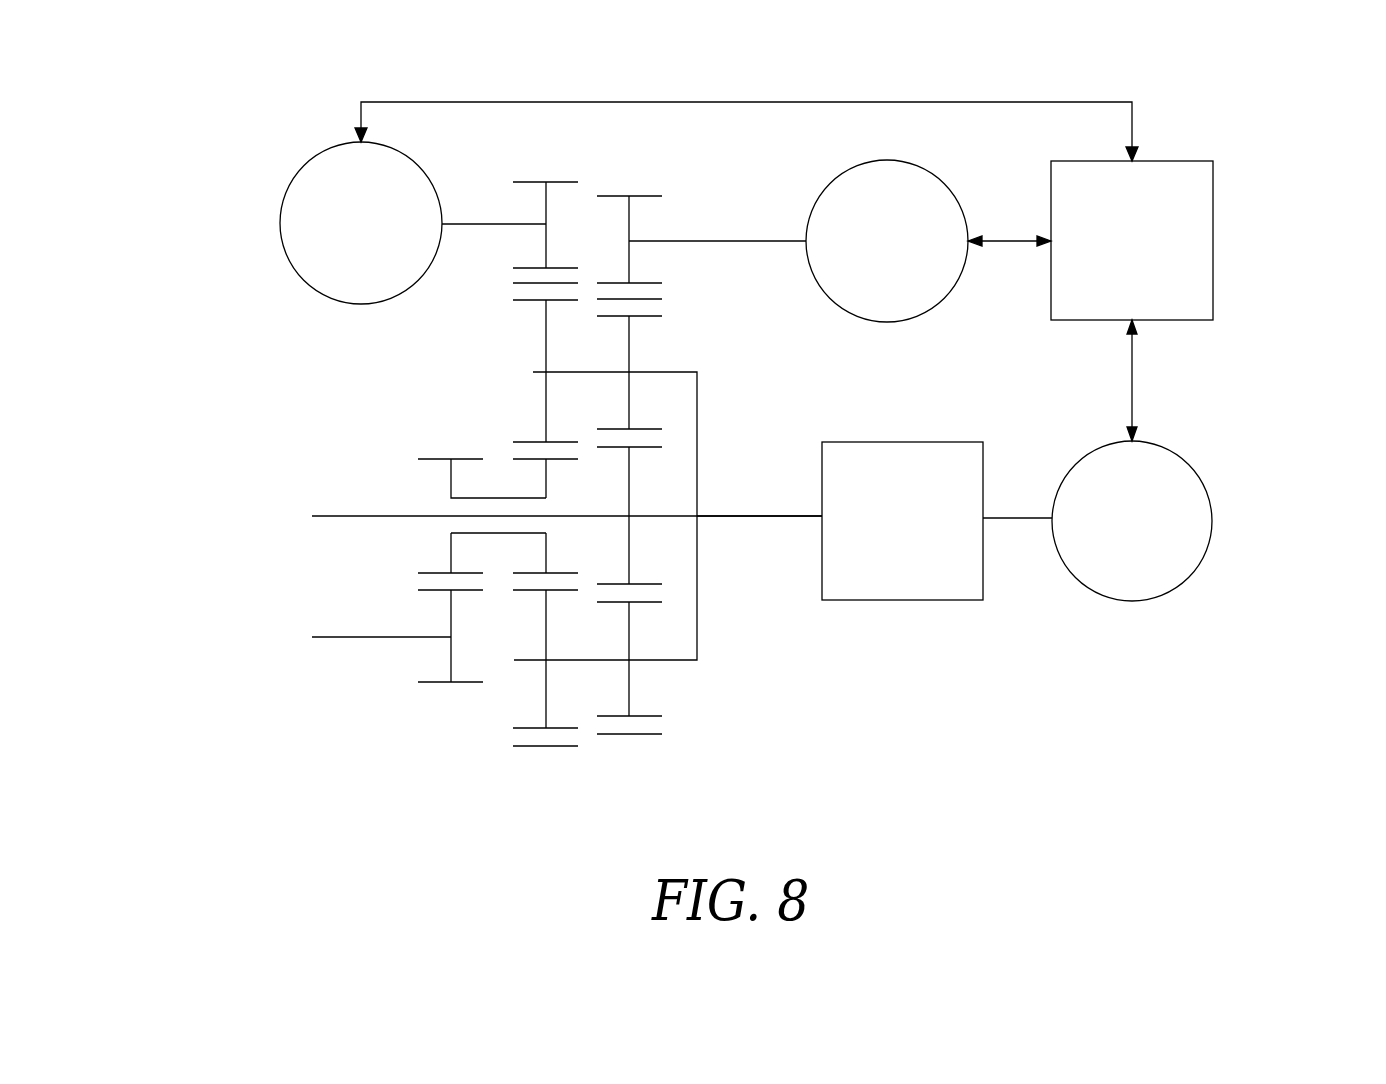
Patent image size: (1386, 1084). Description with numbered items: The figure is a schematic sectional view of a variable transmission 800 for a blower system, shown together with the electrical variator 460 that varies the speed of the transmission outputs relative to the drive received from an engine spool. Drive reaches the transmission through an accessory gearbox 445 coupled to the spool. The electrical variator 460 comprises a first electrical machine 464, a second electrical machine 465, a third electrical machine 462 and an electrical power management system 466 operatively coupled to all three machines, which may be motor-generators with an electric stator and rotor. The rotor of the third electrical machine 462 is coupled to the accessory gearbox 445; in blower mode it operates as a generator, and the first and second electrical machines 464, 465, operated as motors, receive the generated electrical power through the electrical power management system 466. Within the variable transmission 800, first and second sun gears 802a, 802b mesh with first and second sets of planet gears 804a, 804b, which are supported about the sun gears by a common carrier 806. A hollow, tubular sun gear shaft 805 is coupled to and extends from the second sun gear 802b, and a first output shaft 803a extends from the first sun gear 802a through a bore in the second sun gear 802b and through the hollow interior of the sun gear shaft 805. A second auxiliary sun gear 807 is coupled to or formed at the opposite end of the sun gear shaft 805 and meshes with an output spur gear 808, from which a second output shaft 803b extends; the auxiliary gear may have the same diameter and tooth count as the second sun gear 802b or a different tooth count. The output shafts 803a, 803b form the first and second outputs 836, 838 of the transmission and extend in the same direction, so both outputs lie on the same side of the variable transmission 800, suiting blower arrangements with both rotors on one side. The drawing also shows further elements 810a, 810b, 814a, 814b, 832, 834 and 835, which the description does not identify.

The electrical variator 460 is at (1240, 95).
The third electrical machine 462 is at (1185, 455).
The first electrical machine 464 is at (887, 160).
The second electrical machine 465 is at (283, 197).
The electrical power management system 466 is at (1150, 257).
The accessory gearbox 445 is at (921, 536).
The variable transmission 800 is at (350, 409).
The first sun gear 802a is at (629, 472).
The second sun gear 802b is at (546, 553).
The first output shaft 803a is at (491, 501).
The second output shaft 803b is at (334, 639).
The first set of planet gears 804a is at (629, 395).
The second set of planet gears 804b is at (546, 395).
The sun gear shaft 805 is at (497, 498).
The common carrier 806 is at (697, 633).
The second auxiliary sun gear 807 is at (425, 573).
The output spur gear 808 is at (429, 683).
The first brake 810a is at (640, 735).
The second brake 810b is at (537, 747).
The first synchronizer 814a is at (617, 196).
The second synchronizer 814b is at (533, 182).
The output shaft 832 is at (780, 518).
The motor shaft 834 is at (713, 241).
The motor shaft 835 is at (475, 226).
The first output 836 is at (350, 516).
The second output 838 is at (318, 646).